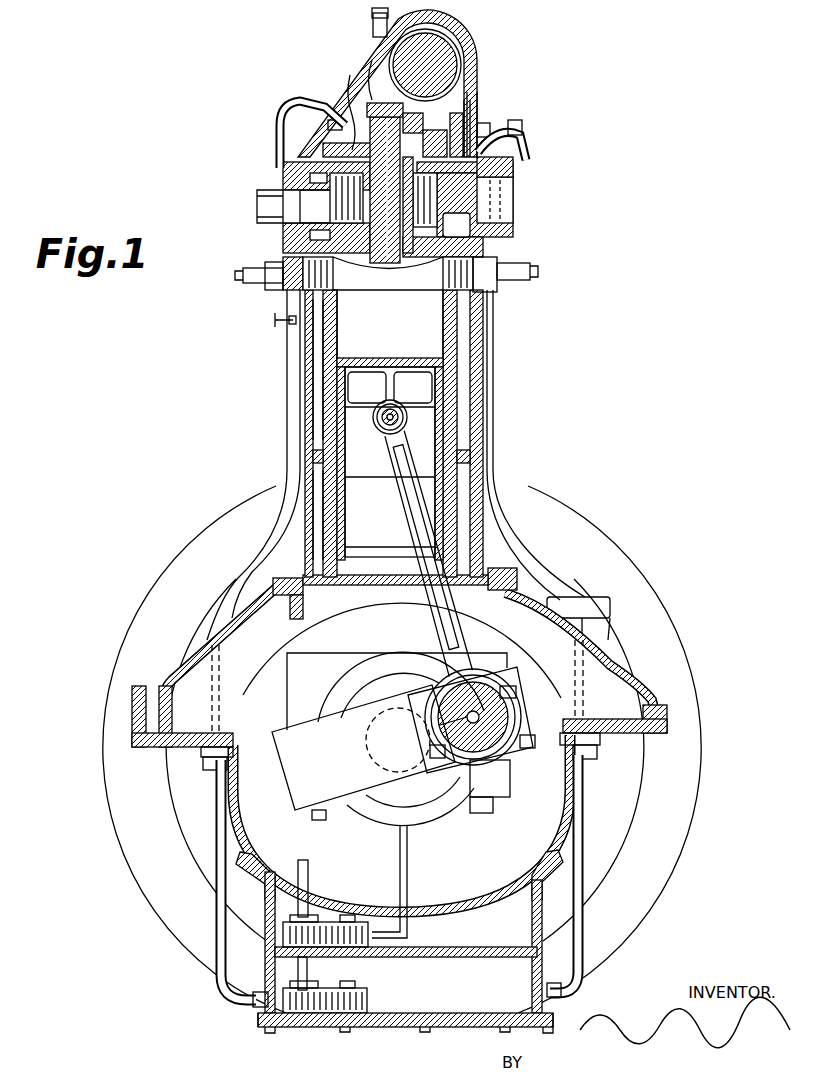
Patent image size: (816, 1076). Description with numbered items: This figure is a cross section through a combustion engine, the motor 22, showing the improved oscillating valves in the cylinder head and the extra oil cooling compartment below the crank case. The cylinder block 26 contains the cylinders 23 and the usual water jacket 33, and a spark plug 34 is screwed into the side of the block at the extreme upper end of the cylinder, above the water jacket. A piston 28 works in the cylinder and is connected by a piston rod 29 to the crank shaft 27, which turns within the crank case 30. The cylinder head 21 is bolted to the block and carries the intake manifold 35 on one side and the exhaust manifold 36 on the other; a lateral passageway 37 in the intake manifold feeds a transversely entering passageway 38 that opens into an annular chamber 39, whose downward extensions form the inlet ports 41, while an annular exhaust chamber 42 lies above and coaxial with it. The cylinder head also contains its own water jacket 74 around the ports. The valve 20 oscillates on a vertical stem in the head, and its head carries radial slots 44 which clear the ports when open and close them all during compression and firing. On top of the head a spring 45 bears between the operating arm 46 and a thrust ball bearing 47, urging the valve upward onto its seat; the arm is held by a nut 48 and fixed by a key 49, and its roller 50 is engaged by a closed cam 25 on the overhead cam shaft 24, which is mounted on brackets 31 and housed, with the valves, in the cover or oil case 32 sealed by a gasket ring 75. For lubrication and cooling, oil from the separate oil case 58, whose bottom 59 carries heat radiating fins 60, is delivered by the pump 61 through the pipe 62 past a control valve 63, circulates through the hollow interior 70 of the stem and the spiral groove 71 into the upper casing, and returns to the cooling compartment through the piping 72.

The valve 20 is at (470, 310).
The cylinder head 21 is at (300, 240).
The motor 22 is at (485, 495).
The cylinder 23 is at (320, 356).
The overhead cam shaft 24 is at (478, 76).
The closed cam 25 is at (438, 38).
The cylinder block 26 is at (305, 438).
The crank shaft 27 is at (372, 790).
The piston 28 is at (430, 388).
The piston rod 29 is at (405, 502).
The crank case 30 is at (543, 868).
The bracket 31 is at (477, 130).
The cover or oil case 32 is at (472, 48).
The water jacket 33 is at (313, 388).
The spark plug 34 is at (252, 278).
The intake manifold 35 is at (262, 204).
The exhaust manifold 36 is at (515, 192).
The lateral passageway 37 is at (272, 228).
The transversely entering passageway 38 is at (290, 190).
The annular chamber 39 is at (292, 160).
The inlet port 41 is at (345, 262).
The annular exhaust chamber 42 is at (505, 162).
The slot 44 is at (412, 268).
The spring 45 is at (340, 112).
The operating arm 46 is at (477, 112).
The thrust ball bearing 47 is at (305, 118).
The nut 48 is at (372, 100).
The key 49 is at (352, 110).
The roller 50 is at (420, 100).
The oil case 58 is at (395, 1003).
The bottom 59 is at (440, 1020).
The heat radiating fin 60 is at (305, 1015).
The pump 61 is at (262, 1020).
The pipe 62 is at (240, 938).
The control valve 63 is at (270, 320).
The hollow interior 70 is at (425, 130).
The spiral groove 71 is at (420, 212).
The piping 72 is at (540, 560).
The water jacket 74 is at (472, 238).
The gasket ring 75 is at (518, 148).